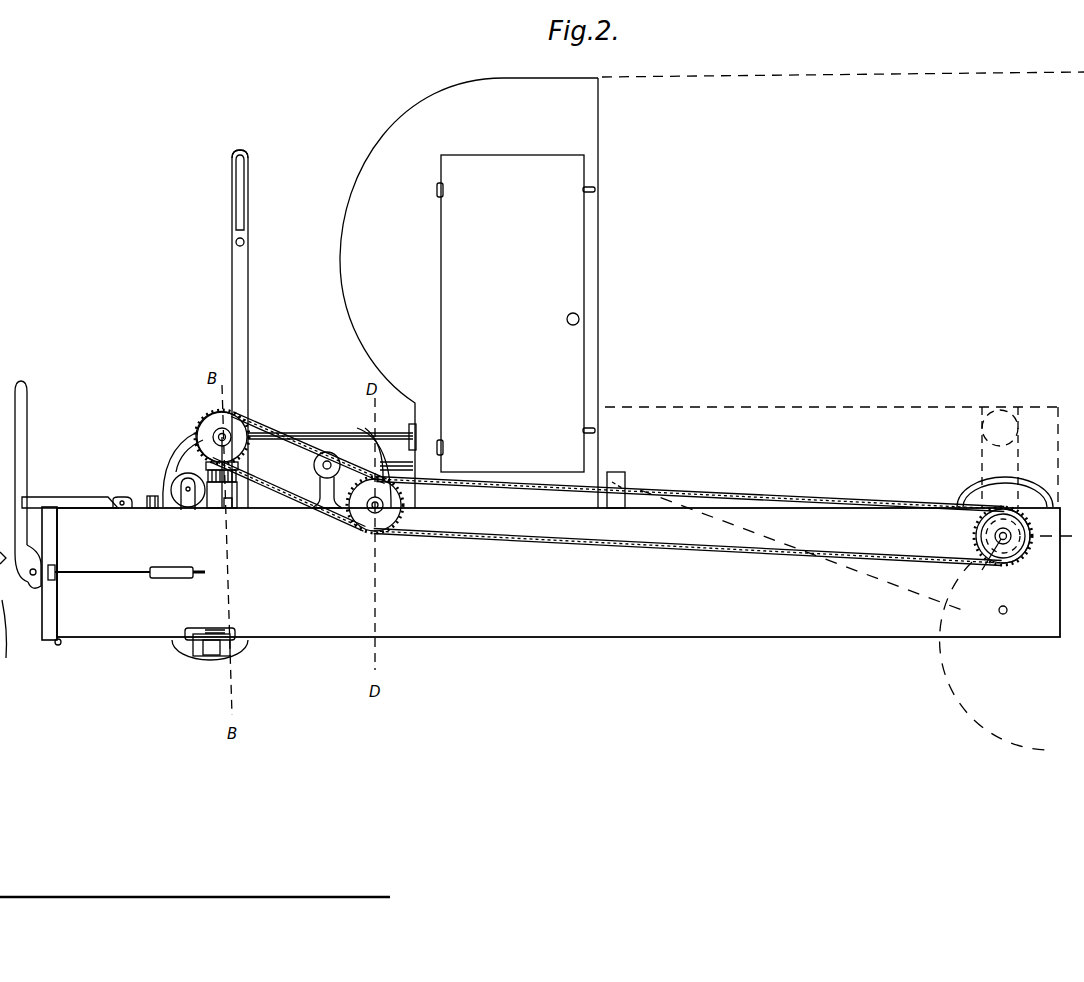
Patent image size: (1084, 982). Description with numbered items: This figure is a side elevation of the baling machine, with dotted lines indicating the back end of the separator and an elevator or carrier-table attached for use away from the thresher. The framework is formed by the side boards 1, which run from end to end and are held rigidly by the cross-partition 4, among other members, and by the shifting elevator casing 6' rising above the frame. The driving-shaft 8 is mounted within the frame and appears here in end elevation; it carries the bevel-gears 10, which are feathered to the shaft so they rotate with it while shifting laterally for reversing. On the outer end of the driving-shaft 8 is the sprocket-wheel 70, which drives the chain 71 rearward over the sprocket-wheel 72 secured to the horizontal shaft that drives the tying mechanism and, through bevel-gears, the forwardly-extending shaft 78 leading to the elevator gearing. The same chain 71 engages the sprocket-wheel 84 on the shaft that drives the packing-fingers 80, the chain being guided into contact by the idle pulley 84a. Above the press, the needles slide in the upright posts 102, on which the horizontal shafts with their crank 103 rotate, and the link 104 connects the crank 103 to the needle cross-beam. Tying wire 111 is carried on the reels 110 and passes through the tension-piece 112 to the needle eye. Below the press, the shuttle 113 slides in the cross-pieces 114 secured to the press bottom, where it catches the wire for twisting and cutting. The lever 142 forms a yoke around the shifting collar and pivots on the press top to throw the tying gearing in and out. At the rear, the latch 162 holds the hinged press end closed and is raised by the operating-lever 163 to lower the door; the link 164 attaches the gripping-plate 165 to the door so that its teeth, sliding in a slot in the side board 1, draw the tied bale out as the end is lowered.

The side boards 1 is at (563, 411).
The cross-partition 4 is at (627, 480).
The shifting elevator casing 6' is at (469, 293).
The driving-shaft 8 is at (983, 565).
The bevel-gears 10 is at (967, 492).
The sprocket-wheel 70 is at (975, 535).
The chain 71 is at (262, 426).
The sprocket-wheel 72 is at (213, 421).
The forwardly-extending shaft 78 is at (308, 433).
The packing-fingers 80 is at (362, 428).
The sprocket-wheel 84 is at (368, 517).
The idle pulley 84a is at (313, 468).
The upright posts 102 is at (243, 268).
The crank 103 is at (243, 203).
The link 104 is at (250, 168).
The reels 110 is at (174, 484).
The wire 111 is at (229, 506).
The tension-piece 112 is at (219, 503).
The shuttle 113 is at (215, 648).
The cross-pieces 114 is at (187, 657).
The lever 142 is at (178, 462).
The latch 162 is at (35, 500).
The operating-lever 163 is at (23, 425).
The link 164 is at (107, 574).
The gripping-plate 165 is at (178, 578).